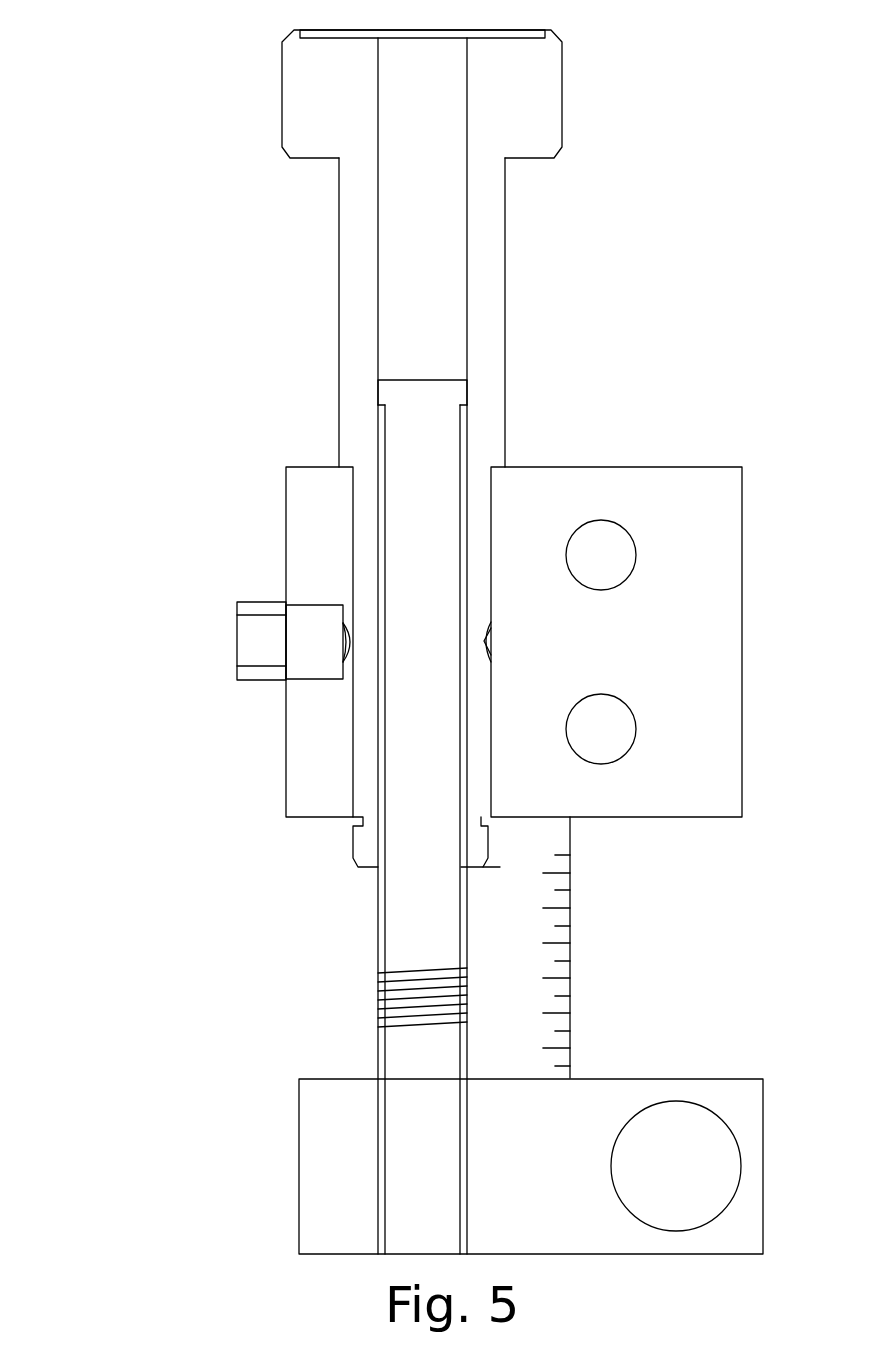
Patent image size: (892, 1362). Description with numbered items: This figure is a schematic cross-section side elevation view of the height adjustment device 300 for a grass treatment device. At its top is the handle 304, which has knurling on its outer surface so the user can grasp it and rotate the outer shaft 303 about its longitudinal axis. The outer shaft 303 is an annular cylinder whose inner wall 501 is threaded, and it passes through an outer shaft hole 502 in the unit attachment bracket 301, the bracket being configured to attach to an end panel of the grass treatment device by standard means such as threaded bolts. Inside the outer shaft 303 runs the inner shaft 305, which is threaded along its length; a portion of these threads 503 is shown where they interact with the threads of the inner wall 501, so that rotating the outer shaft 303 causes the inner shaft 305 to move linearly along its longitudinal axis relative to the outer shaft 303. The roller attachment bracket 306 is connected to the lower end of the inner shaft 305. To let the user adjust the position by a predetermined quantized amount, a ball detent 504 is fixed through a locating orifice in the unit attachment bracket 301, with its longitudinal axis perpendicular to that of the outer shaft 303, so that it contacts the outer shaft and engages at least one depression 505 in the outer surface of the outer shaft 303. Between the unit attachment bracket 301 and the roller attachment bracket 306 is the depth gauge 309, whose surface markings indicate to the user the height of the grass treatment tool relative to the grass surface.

The height adjustment device 300 is at (228, 144).
The handle 304 is at (562, 92).
The outer shaft 303 is at (505, 252).
The inner wall 501 is at (468, 186).
The inner shaft 305 is at (390, 903).
The threads 503 is at (388, 1003).
The outer shaft hole 502 is at (353, 514).
The ball detent 504 is at (243, 637).
The unit attachment bracket 301 is at (565, 467).
The depression 505 is at (487, 643).
The depth gauge 309 is at (570, 925).
The roller attachment bracket 306 is at (662, 1077).